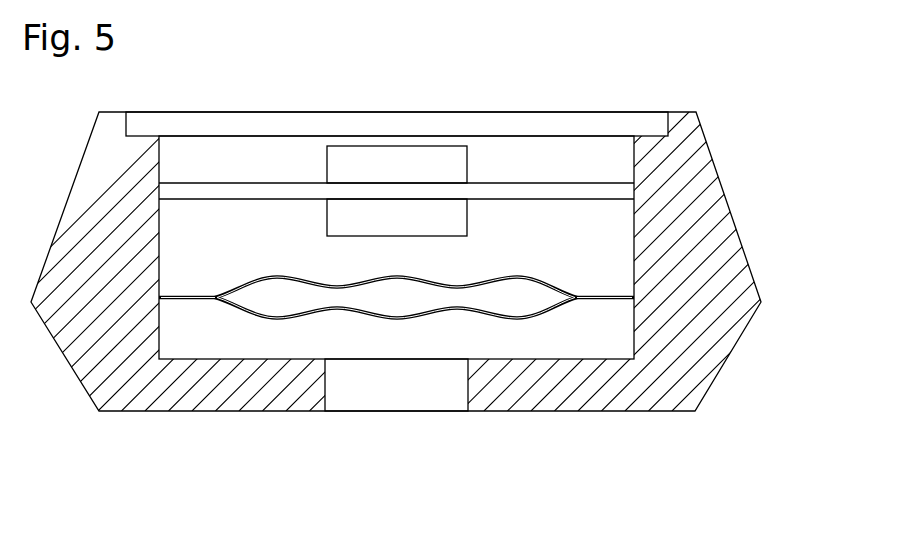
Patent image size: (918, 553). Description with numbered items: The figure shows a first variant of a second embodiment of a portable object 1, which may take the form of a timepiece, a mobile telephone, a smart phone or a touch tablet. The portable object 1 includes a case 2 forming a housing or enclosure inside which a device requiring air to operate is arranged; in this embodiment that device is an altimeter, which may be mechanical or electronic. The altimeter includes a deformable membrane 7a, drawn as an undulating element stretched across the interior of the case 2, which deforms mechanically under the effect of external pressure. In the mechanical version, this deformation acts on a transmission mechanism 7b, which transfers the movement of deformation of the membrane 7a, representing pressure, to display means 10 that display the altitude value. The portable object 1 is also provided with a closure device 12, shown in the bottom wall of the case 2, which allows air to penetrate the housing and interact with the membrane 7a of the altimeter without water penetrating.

The portable object 1 is at (459, 294).
The case 2 is at (741, 172).
The deformable membrane 7a is at (518, 278).
The transmission mechanism 7b is at (385, 230).
The display means 10 is at (385, 174).
The closure device 12 is at (385, 395).